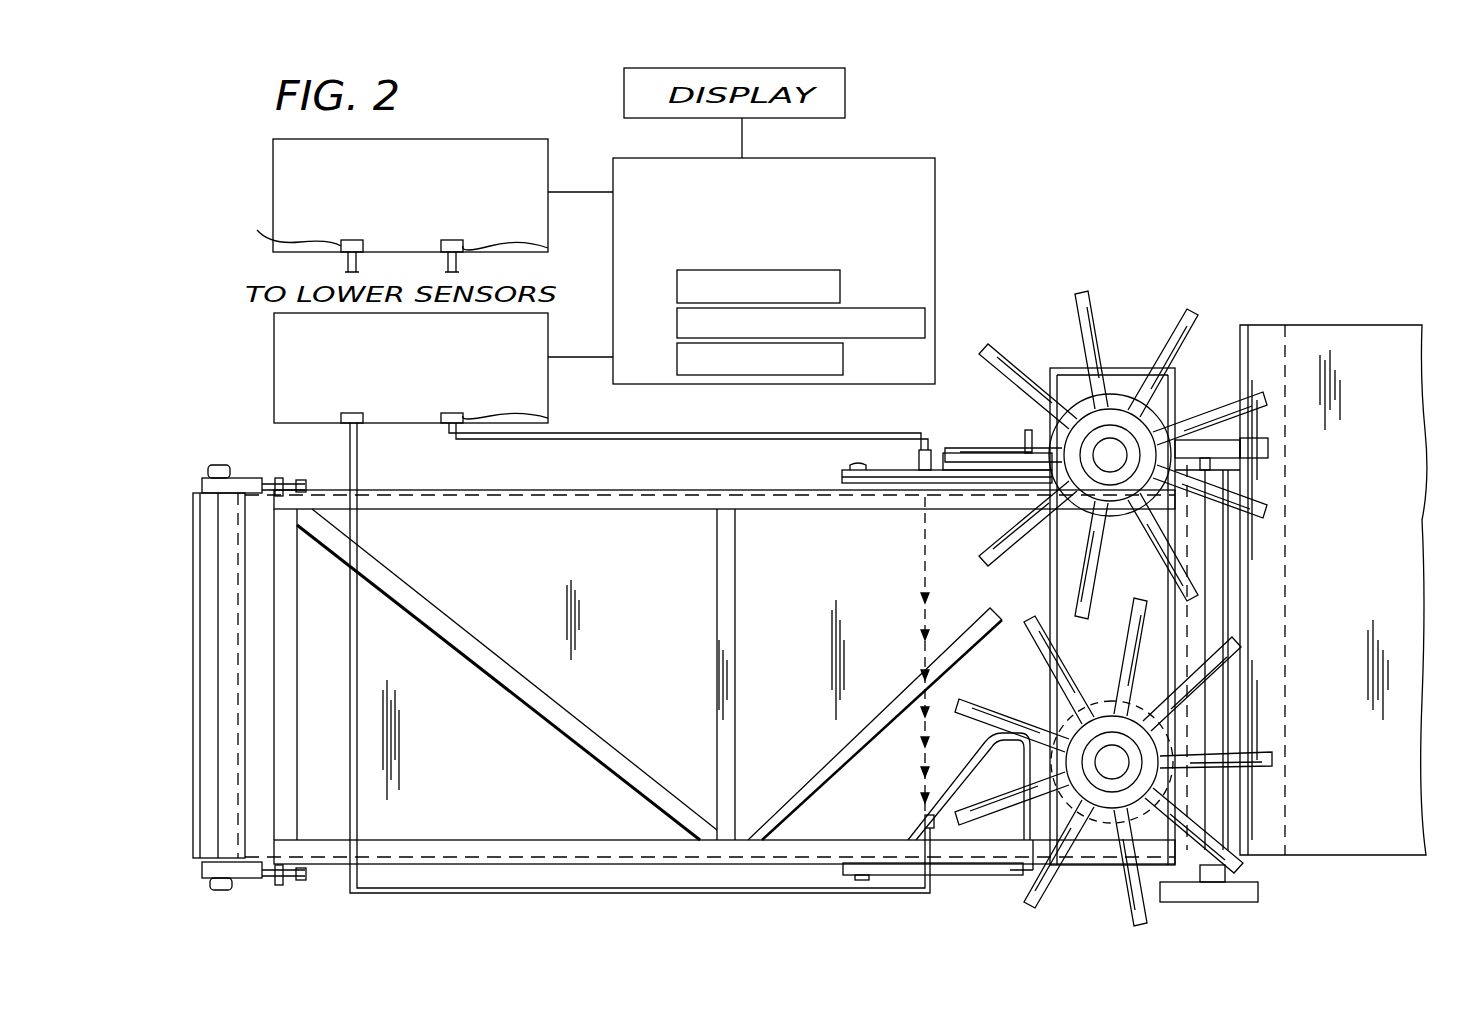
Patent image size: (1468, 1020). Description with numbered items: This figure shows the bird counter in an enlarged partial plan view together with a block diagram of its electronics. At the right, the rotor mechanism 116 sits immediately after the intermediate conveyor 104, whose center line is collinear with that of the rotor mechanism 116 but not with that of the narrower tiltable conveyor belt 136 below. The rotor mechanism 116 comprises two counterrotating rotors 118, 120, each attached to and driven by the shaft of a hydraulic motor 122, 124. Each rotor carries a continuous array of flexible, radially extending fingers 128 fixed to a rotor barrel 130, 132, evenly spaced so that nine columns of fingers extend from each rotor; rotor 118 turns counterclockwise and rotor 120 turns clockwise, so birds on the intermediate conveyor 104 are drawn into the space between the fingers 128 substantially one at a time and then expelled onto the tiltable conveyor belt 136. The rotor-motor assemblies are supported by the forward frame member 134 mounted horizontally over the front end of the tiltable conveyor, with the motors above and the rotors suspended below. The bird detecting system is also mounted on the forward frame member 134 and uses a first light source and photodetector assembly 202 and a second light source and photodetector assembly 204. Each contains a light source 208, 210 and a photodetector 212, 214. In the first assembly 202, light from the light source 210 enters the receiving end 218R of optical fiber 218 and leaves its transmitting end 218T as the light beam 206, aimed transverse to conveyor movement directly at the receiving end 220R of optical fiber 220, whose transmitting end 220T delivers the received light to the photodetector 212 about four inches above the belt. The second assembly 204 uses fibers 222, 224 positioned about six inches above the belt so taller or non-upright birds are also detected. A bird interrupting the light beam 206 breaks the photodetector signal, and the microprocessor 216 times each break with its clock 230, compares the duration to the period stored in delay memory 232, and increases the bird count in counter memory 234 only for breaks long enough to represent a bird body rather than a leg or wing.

The intermediate conveyor 104 is at (1423, 535).
The rotor mechanism 116 is at (1218, 286).
The counterrotating rotor 118 is at (1118, 885).
The counterrotating rotor 120 is at (1033, 354).
The hydraulic motor 122 is at (1108, 812).
The hydraulic motor 124 is at (1180, 358).
The flexible fingers 128 is at (1250, 490).
The rotor barrel 130 is at (1212, 630).
The rotor barrel 132 is at (1115, 392).
The forward frame member 134 is at (1050, 425).
The tiltable conveyor belt 136 is at (662, 598).
The first light source and photodetector assembly 202 is at (375, 368).
The second light source and photodetector assembly 204 is at (273, 175).
The light beam 206 is at (922, 546).
The light source 208 is at (531, 249).
The light source 210 is at (548, 418).
The photodetector 212 is at (363, 425).
The photodetector 214 is at (270, 224).
The microprocessor 216 is at (855, 158).
The first optical fiber 218 is at (722, 433).
The receiving end 218R is at (445, 440).
The transmitting end 218T is at (925, 462).
The second optical fiber 220 is at (545, 893).
The transmitting end 220T is at (348, 430).
The receiving end 220R is at (925, 820).
The optical fiber 222 is at (459, 262).
The optical fiber 224 is at (340, 262).
The clock 230 is at (866, 258).
The delay memory 232 is at (926, 286).
The counter memory 234 is at (846, 359).